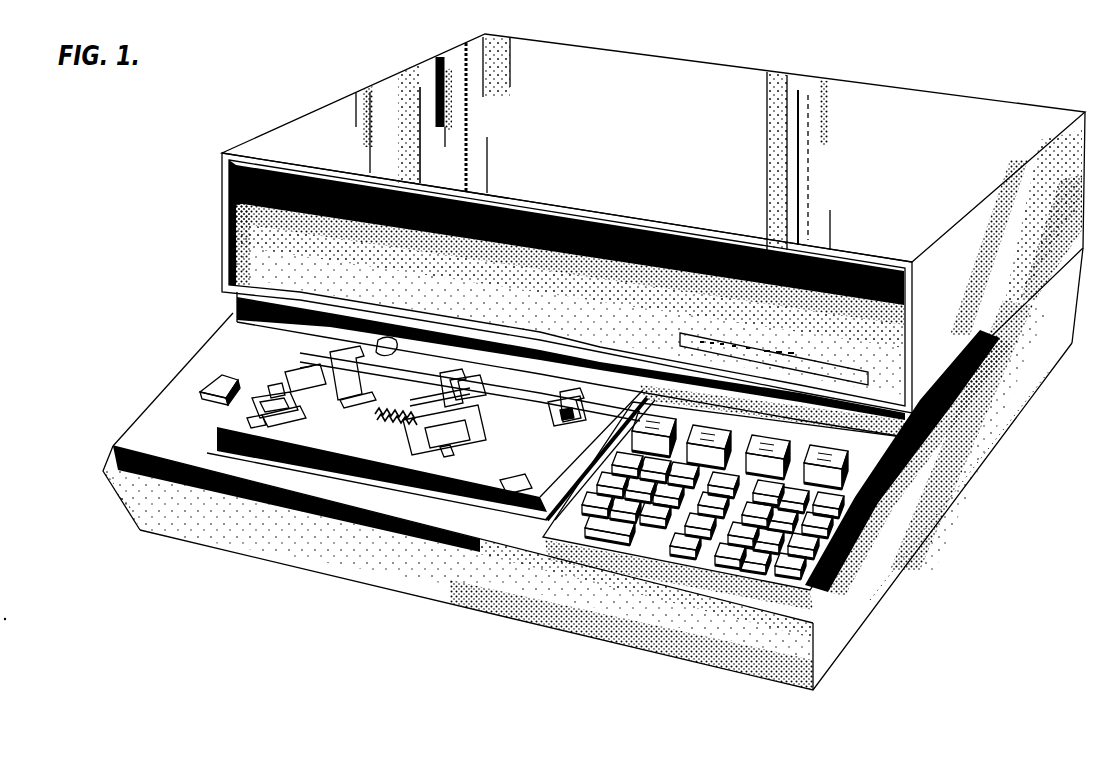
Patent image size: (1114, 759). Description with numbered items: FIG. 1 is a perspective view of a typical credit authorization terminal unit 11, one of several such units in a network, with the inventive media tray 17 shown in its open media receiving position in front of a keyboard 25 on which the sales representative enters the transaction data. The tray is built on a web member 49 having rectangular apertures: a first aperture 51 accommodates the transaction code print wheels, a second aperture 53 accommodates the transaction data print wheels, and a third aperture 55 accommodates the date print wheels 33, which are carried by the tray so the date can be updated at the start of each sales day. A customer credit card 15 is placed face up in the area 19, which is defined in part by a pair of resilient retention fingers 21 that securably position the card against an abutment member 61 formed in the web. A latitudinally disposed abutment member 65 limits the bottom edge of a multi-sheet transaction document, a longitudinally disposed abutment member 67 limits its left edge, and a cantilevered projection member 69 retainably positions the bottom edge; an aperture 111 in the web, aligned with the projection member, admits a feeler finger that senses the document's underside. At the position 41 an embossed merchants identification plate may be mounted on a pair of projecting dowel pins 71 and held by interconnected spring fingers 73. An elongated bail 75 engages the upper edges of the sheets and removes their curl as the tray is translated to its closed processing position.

The terminal unit 11 is at (898, 82).
The credit card 15 is at (297, 380).
The media tray 17 is at (571, 498).
The credit card receiving area 19 is at (356, 355).
The resilient retention fingers 21 is at (427, 403).
The keyboard 25 is at (785, 582).
The date print wheels 33 is at (383, 423).
The merchants identification plate position 41 is at (459, 433).
The web member 49 is at (568, 456).
The first aperture 51 is at (565, 415).
The second aperture 53 is at (478, 397).
The third aperture 55 is at (377, 403).
The abutment member 61 is at (383, 335).
The latitudinally disposed abutment member 65 is at (510, 483).
The longitudinally disposed abutment member 67 is at (263, 412).
The cantilevered projection member 69 is at (247, 415).
The projecting dowel pins 71 is at (490, 407).
The interconnected spring fingers 73 is at (457, 453).
The bail 75 is at (575, 395).
The aperture 111 is at (242, 376).